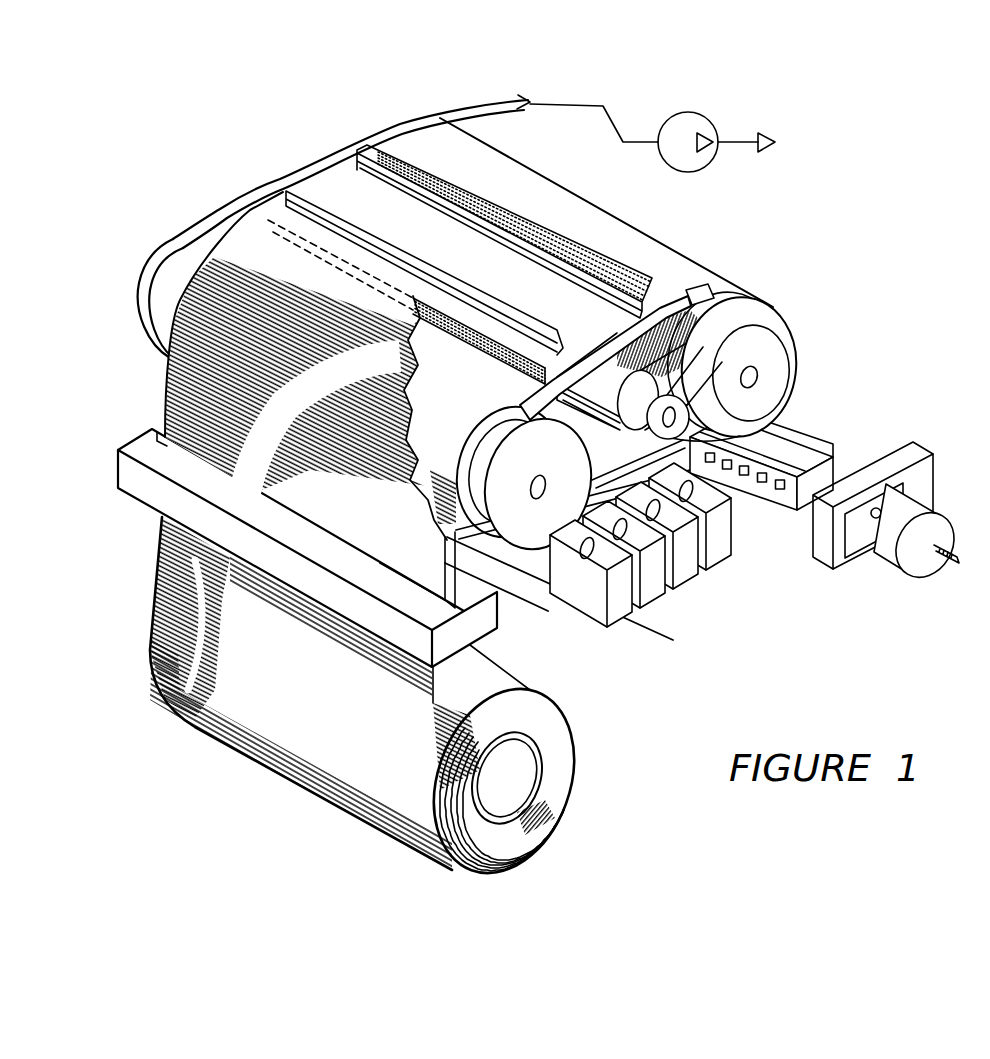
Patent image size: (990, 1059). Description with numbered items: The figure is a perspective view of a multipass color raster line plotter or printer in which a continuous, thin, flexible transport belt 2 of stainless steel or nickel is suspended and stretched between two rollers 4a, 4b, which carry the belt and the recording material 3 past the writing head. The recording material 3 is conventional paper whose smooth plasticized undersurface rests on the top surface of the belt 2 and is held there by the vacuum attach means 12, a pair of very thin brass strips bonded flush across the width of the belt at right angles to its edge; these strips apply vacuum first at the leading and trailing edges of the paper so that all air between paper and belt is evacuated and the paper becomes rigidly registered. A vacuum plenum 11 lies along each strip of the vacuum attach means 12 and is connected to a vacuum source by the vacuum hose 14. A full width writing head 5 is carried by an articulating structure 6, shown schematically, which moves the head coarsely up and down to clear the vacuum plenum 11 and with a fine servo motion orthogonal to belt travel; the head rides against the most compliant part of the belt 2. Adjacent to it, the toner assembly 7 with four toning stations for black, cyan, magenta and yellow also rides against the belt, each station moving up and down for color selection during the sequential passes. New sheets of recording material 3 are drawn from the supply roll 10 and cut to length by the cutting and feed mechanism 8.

The transport belt 2 is at (237, 219).
The recording material 3 is at (158, 389).
The roller 4a is at (150, 262).
The roller 4b is at (772, 308).
The writing head 5 is at (803, 438).
The articulating structure 6 is at (880, 468).
The toner assembly 7 is at (720, 572).
The cutting and feed mechanism 8 is at (485, 614).
The supply roll 10 is at (327, 790).
The vacuum plenum 11 is at (531, 253).
The vacuum attach means 12 is at (573, 253).
The vacuum hose 14 is at (498, 112).